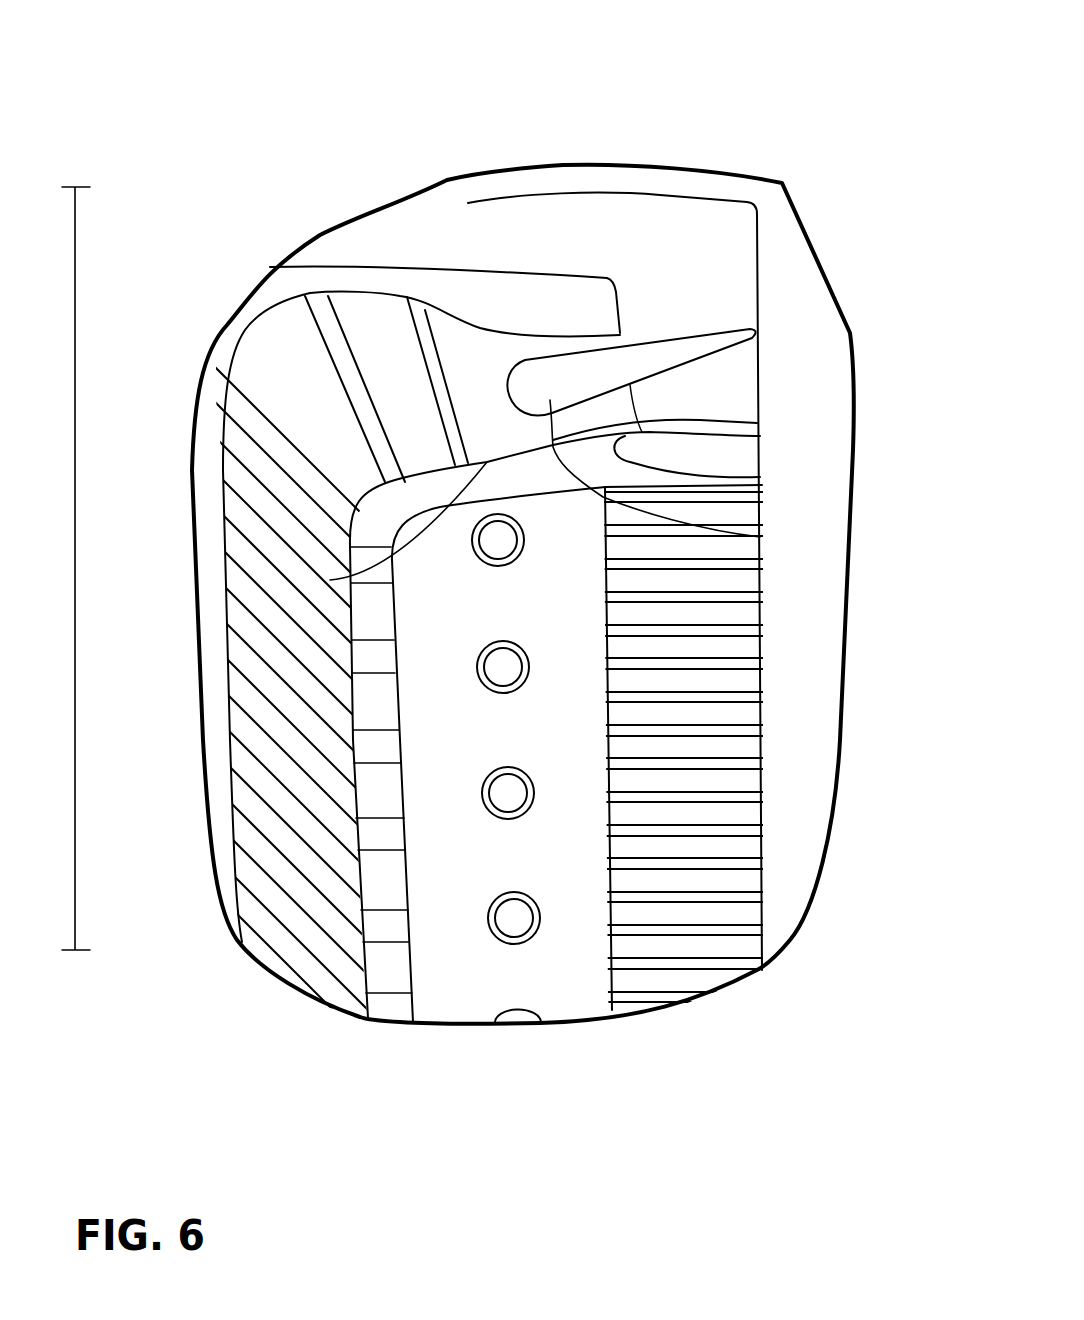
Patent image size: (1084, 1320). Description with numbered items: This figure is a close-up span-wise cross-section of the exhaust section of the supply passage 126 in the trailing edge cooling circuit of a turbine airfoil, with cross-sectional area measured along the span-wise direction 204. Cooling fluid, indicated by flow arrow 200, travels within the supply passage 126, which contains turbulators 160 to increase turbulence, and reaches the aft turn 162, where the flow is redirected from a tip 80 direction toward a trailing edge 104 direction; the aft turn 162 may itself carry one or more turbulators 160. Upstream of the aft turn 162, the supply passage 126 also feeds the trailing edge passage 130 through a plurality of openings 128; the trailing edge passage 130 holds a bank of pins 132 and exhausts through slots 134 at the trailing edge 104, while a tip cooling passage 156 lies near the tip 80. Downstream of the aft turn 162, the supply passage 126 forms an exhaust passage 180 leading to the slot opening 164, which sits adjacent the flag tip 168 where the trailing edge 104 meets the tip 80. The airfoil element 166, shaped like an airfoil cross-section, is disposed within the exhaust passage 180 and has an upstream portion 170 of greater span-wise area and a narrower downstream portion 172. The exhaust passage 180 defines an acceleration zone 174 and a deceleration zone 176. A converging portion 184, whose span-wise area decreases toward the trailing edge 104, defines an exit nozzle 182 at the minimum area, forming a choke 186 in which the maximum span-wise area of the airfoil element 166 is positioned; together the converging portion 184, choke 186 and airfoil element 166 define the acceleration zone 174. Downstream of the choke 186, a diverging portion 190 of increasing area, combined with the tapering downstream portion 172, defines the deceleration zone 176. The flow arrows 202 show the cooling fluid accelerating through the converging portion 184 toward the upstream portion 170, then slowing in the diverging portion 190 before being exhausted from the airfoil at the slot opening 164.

The tip 80 is at (638, 192).
The trailing edge 104 is at (760, 258).
The supply passage 126 is at (262, 980).
The openings 128 is at (393, 997).
The trailing edge passage 130 is at (458, 990).
The pins 132 is at (533, 975).
The slots 134 is at (684, 970).
The tip cooling passage 156 is at (500, 215).
The turbulators 160 is at (310, 355).
The aft turn 162 is at (287, 293).
The slot opening 164 is at (622, 303).
The airfoil element 166 is at (768, 330).
The flag tip 168 is at (782, 184).
The upstream portion 170 is at (760, 537).
The downstream portion 172 is at (667, 367).
The acceleration zone 174 is at (492, 320).
The deceleration zone 176 is at (660, 290).
The exhaust passage 180 is at (492, 424).
The exit nozzle 182 is at (493, 370).
The converging portion 184 is at (330, 580).
The choke 186 is at (757, 423).
The diverging portion 190 is at (760, 477).
The flow arrow 200 is at (410, 386).
The flow arrows 202 is at (540, 455).
The span-wise direction 204 is at (77, 332).